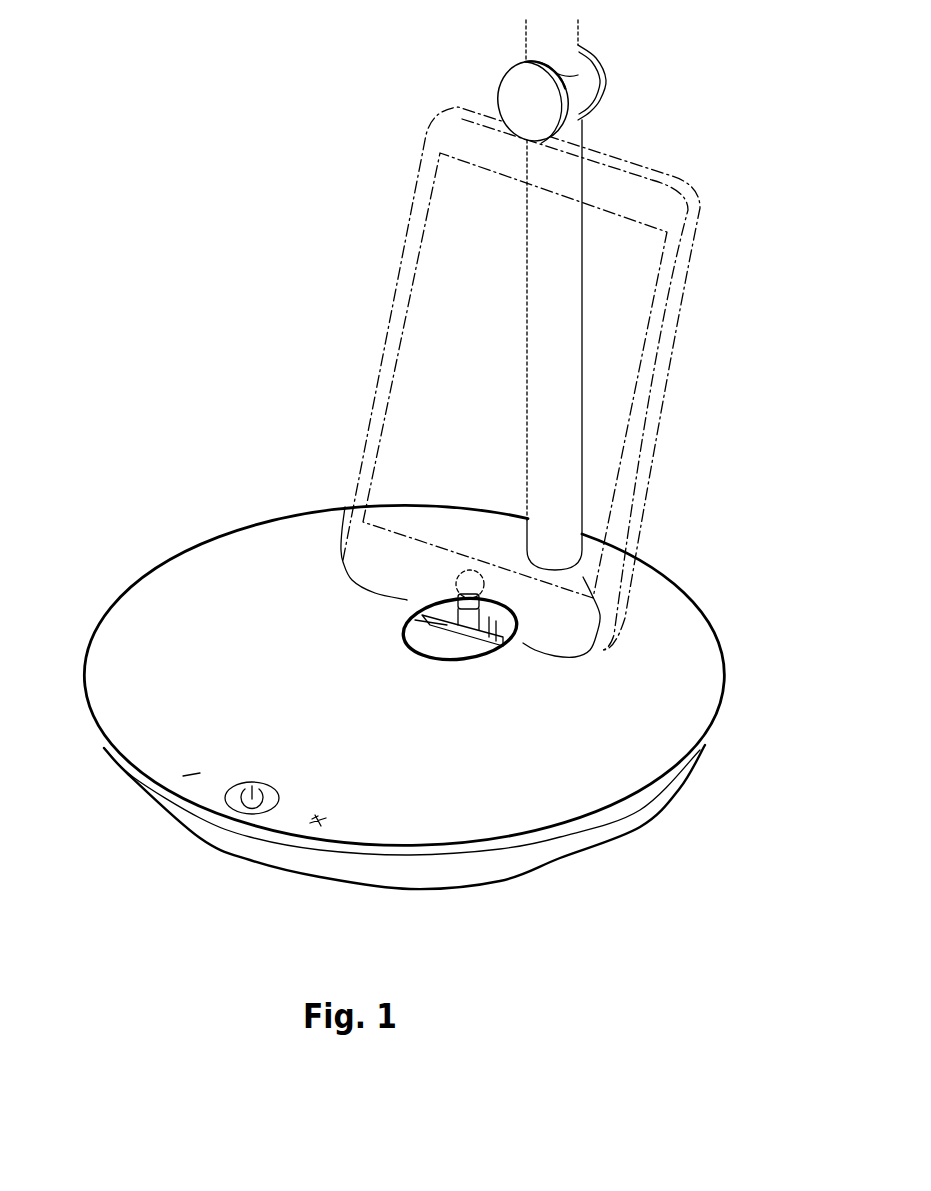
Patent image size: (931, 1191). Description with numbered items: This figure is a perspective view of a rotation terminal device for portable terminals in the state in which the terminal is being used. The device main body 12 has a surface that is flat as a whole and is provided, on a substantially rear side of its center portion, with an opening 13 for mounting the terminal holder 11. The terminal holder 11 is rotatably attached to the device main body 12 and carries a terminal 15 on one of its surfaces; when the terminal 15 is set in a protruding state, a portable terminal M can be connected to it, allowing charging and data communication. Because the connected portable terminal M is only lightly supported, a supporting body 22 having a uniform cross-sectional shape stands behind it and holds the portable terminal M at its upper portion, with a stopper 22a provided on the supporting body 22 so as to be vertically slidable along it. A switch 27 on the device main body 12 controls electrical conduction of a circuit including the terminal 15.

The terminal holder 11 is at (397, 633).
The device main body 12 is at (637, 643).
The opening 13 is at (443, 592).
The terminal 15 is at (486, 582).
The supporting body 22 is at (580, 140).
The stopper 22a is at (600, 63).
The switch 27 is at (233, 808).
The portable terminal M is at (396, 288).